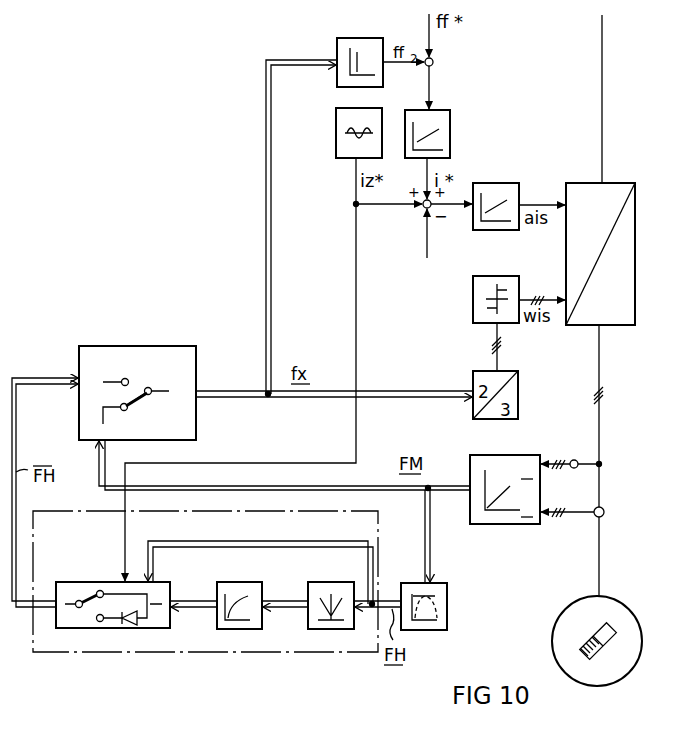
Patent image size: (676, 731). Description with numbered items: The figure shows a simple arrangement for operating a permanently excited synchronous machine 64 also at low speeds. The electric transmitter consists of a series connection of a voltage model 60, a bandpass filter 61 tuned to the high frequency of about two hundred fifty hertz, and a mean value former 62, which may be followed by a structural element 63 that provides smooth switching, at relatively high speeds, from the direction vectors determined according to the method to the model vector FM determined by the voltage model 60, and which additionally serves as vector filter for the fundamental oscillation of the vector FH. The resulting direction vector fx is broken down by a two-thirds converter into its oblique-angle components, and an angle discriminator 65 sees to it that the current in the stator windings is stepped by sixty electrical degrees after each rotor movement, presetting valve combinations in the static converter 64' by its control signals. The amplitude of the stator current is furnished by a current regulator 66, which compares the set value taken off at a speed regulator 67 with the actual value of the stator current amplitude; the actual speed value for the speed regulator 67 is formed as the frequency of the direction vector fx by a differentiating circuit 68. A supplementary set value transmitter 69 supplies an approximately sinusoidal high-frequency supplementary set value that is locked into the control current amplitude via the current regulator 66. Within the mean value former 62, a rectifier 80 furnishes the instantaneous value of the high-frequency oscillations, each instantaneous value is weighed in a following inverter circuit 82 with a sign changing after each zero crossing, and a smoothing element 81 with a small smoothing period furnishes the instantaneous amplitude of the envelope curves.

The voltage model 60 is at (516, 525).
The bandpass filter 61 is at (447, 626).
The mean value former 62 is at (198, 652).
The structural element 63 is at (180, 346).
The permanently excited synchronous machine 64 is at (592, 633).
The static converter 64' is at (601, 272).
The angle discriminator 65 is at (473, 294).
The current regulator 66 is at (512, 183).
The speed regulator 67 is at (449, 119).
The differentiating circuit 68 is at (337, 46).
The supplementary set value transmitter 69 is at (336, 134).
The rectifier 80 is at (333, 630).
The smoothing element 81 is at (237, 630).
The switching unit with diode 82 is at (111, 630).